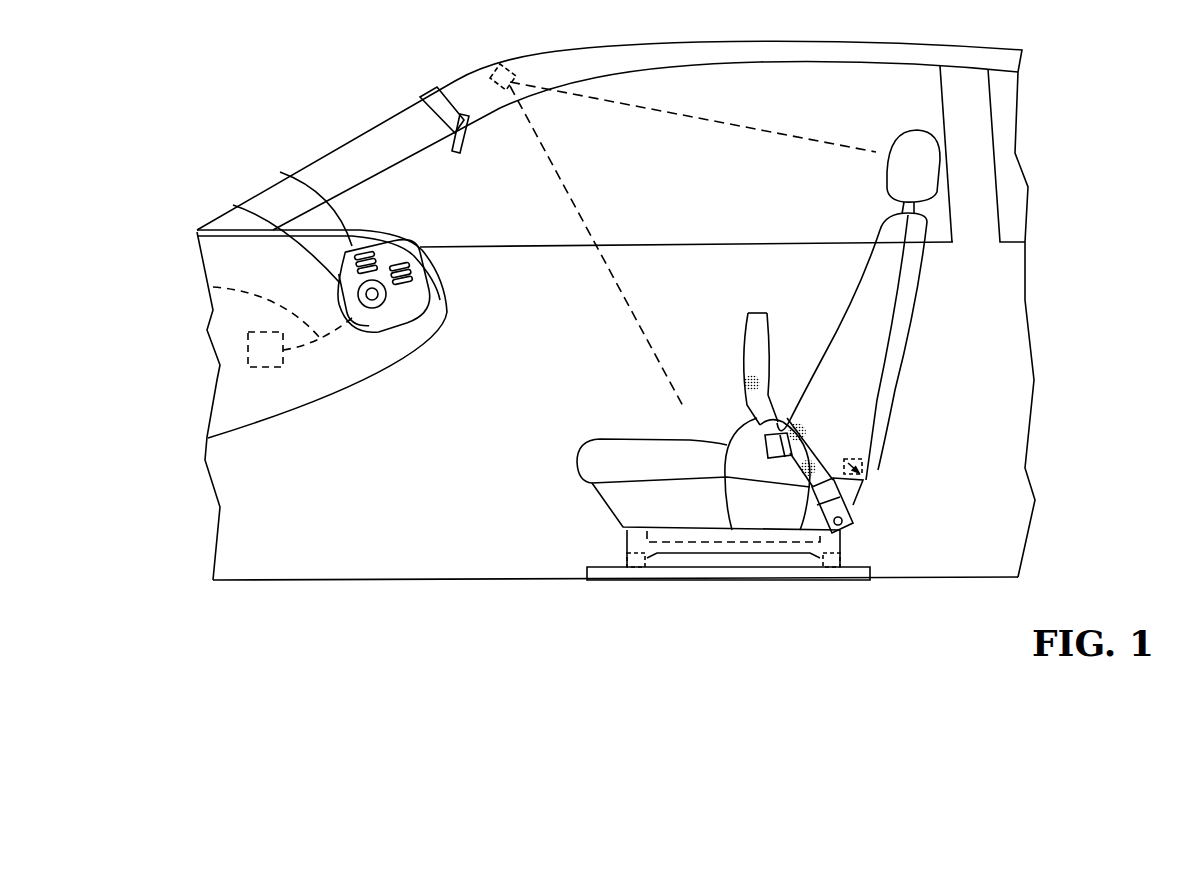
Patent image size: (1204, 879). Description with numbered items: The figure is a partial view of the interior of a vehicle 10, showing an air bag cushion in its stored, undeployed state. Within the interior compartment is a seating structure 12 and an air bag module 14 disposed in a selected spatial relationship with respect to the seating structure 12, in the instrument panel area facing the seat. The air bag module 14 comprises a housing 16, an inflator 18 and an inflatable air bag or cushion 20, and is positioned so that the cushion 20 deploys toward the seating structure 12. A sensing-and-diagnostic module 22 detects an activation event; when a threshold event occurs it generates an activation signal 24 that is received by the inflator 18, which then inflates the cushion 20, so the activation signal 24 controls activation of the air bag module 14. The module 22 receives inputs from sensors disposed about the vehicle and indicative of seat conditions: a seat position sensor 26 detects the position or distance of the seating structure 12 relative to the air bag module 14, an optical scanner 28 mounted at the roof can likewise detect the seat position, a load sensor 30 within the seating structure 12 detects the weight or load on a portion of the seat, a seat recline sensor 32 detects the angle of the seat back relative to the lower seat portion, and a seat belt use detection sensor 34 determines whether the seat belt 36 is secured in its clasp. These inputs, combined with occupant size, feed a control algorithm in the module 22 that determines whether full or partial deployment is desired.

The vehicle 10 is at (1050, 131).
The seating structure 12 is at (907, 350).
The air bag module 14 is at (414, 297).
The housing 16 is at (233, 205).
The inflator 18 is at (387, 322).
The inflatable air bag or cushion 20 is at (280, 172).
The sensing-and-diagnostic module 22 is at (265, 367).
The activation signal 24 is at (213, 287).
The seat position sensor 26 is at (620, 567).
The optical scanner 28 is at (492, 66).
The load sensor 30 is at (843, 565).
The seat recline sensor 32 is at (862, 476).
The seat belt use detection sensor 34 is at (830, 507).
The seat belt 36 is at (733, 530).